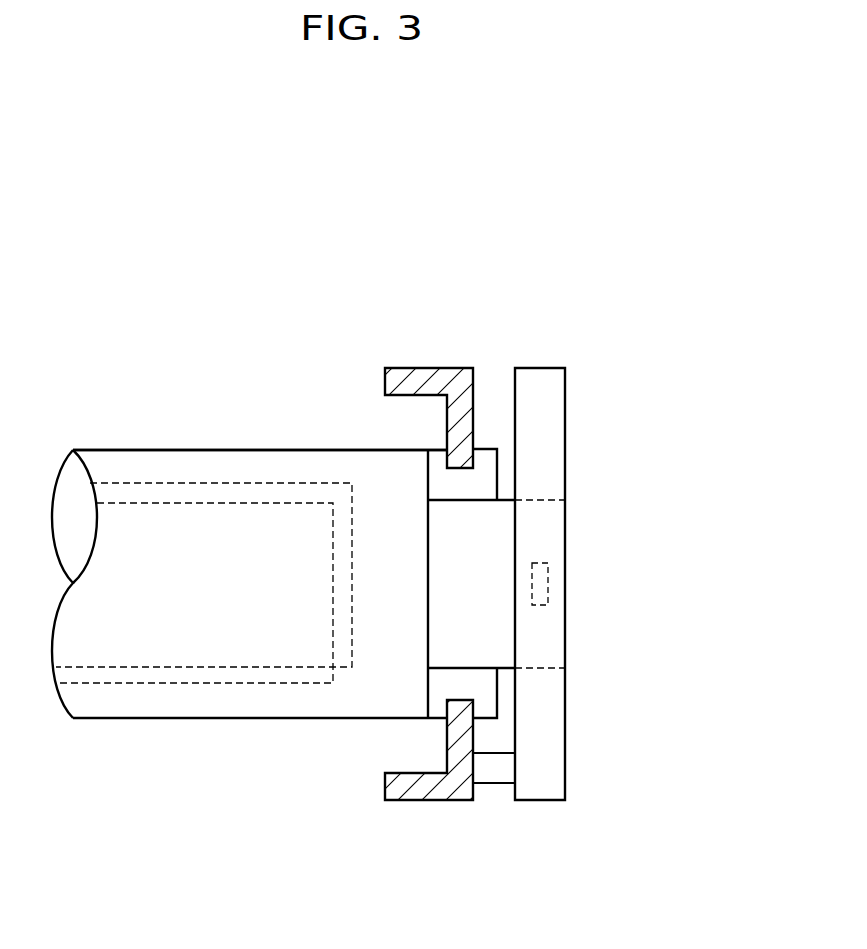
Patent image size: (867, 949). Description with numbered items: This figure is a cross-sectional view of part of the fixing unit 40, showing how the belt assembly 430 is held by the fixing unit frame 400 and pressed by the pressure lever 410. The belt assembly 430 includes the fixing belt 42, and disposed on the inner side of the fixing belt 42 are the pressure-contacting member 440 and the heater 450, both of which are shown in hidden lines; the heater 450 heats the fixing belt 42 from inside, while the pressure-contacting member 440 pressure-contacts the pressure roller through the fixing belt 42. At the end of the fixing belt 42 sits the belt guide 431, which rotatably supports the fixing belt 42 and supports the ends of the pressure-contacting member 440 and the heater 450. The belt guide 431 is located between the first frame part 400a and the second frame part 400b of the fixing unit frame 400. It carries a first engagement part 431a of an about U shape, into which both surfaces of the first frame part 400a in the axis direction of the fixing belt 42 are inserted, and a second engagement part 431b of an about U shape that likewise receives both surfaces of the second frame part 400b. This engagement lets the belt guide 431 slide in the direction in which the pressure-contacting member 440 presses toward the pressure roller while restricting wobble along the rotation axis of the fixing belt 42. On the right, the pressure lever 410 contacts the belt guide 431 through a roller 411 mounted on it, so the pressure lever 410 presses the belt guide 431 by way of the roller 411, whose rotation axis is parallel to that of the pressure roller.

The fixing unit 40 is at (433, 474).
The fixing belt 42 is at (205, 702).
The fixing unit frame 400 is at (433, 474).
The first frame part 400a is at (462, 422).
The second frame part 400b is at (458, 750).
The pressure lever 410 is at (548, 475).
The roller 411 is at (548, 580).
The belt assembly 430 is at (307, 450).
The belt guide 431 is at (499, 688).
The first engagement part 431a is at (485, 448).
The second engagement part 431b is at (483, 720).
The pressure-contacting member 440 is at (207, 503).
The heater 450 is at (147, 483).